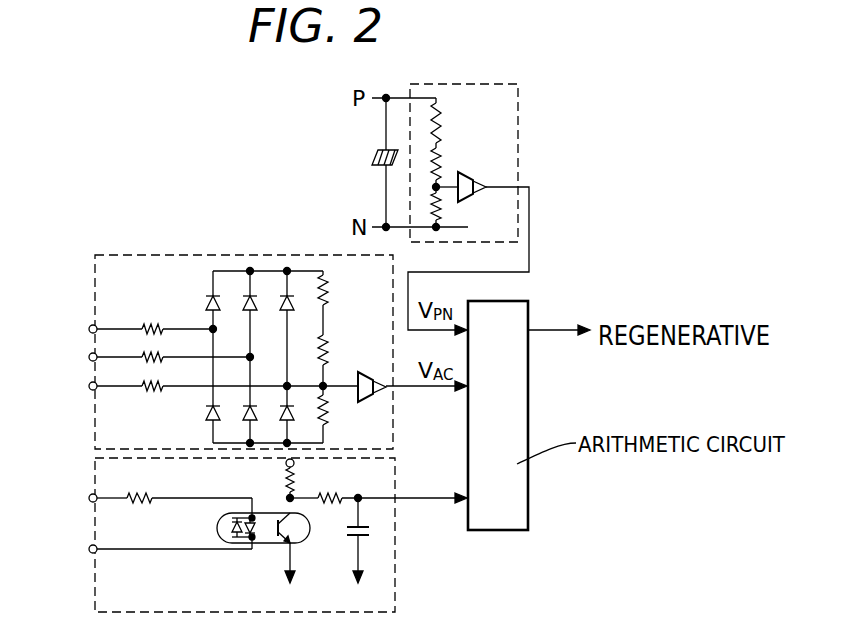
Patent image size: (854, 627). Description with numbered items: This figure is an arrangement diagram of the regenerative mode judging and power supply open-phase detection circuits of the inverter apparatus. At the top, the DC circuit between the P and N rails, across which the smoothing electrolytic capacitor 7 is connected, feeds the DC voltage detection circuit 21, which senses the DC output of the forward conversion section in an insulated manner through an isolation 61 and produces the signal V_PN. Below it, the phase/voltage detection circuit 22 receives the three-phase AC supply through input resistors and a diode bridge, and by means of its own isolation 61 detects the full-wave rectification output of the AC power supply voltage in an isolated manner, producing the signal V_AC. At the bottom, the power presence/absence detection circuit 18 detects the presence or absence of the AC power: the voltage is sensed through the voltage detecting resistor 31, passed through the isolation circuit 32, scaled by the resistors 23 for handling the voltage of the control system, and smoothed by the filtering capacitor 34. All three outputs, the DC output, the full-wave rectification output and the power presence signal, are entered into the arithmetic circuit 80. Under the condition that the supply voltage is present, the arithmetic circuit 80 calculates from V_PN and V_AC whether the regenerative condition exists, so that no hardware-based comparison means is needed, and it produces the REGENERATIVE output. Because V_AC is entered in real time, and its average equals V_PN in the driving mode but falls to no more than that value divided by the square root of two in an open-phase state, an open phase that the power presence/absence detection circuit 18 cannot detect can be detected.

The smoothing electrolytic capacitor 7 is at (377, 159).
The DC voltage detection circuit 21 is at (518, 108).
The isolation 61 is at (478, 196).
The phase/voltage detection circuit 22 is at (95, 288).
The arithmetic circuit 80 is at (509, 426).
The power presence/absence detection circuit 18 is at (279, 535).
The voltage detecting resistor 31 is at (147, 489).
The isolation circuit 32 is at (265, 548).
The resistors for handling the voltage of a control system 23 is at (295, 478).
The filtering capacitor 34 is at (370, 533).